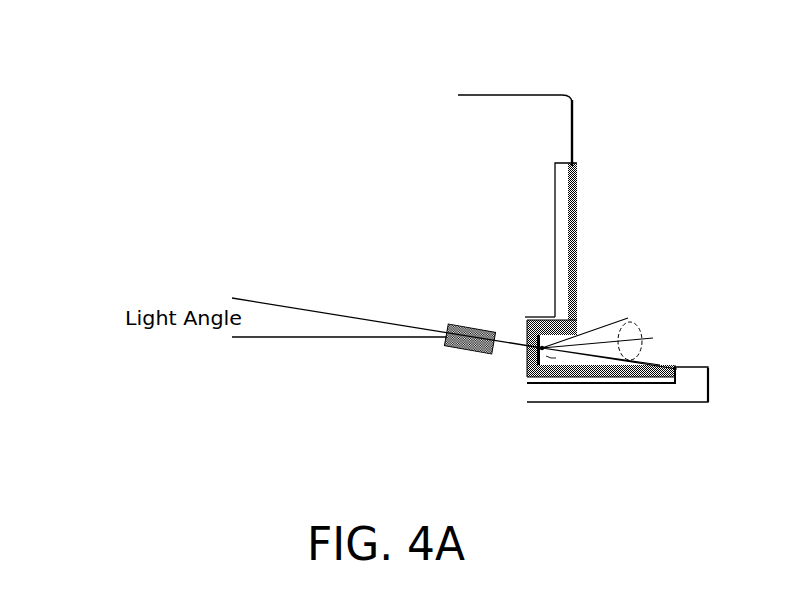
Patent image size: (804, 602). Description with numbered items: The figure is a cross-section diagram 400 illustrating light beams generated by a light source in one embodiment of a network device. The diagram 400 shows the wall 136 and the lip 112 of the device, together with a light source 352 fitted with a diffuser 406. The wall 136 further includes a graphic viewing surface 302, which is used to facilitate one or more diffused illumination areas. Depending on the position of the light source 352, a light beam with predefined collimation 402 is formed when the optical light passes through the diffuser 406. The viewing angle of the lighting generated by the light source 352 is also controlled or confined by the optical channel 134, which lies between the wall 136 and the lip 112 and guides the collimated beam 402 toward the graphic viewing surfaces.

The cross-section diagram 400 is at (68, 117).
The wall 136 is at (573, 132).
The graphic viewing surface 302 is at (575, 238).
The optical channel 134 is at (555, 368).
The lip 112 is at (633, 395).
The diffuser 406 is at (525, 362).
The light source 352 is at (487, 330).
The light beam with predefined collimation 402 is at (628, 322).